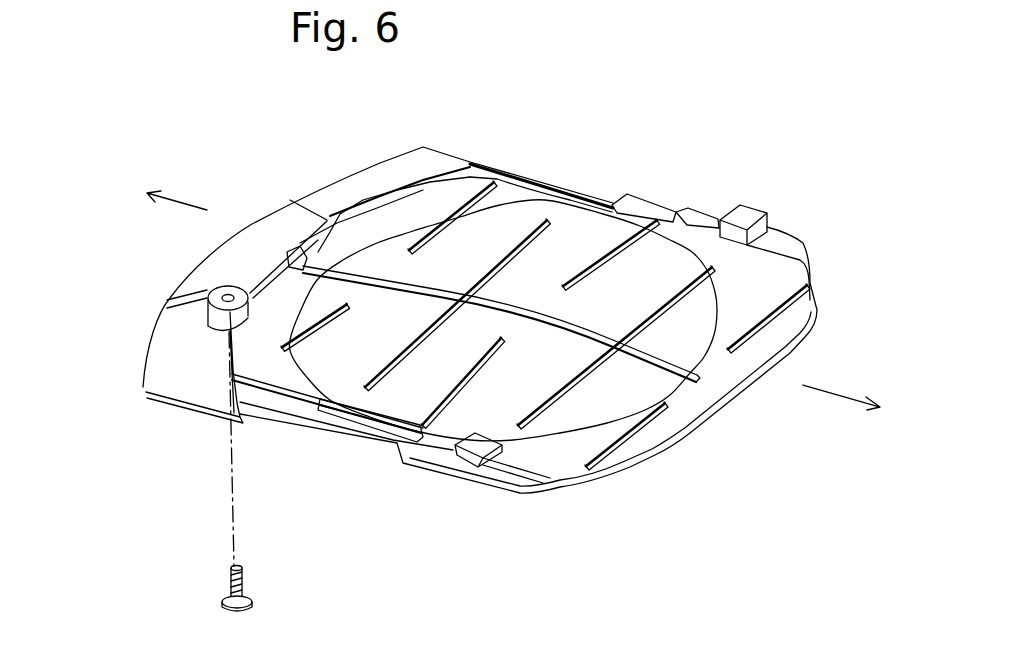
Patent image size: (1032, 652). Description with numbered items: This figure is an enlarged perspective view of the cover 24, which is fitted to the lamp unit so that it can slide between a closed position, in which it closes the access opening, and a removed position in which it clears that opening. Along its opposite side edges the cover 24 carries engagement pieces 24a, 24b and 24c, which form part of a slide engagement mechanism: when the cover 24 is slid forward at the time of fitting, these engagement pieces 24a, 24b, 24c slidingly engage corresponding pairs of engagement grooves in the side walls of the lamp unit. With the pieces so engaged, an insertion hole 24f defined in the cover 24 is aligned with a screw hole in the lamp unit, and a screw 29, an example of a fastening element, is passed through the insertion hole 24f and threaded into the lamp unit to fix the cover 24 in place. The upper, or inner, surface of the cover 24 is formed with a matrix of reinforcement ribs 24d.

The cover 24 is at (477, 323).
The engagement piece 24a is at (203, 390).
The engagement piece 24b is at (377, 441).
The engagement piece 24c is at (475, 465).
The reinforcement ribs 24d is at (615, 345).
The insertion hole 24f is at (208, 300).
The screw 29 is at (244, 583).